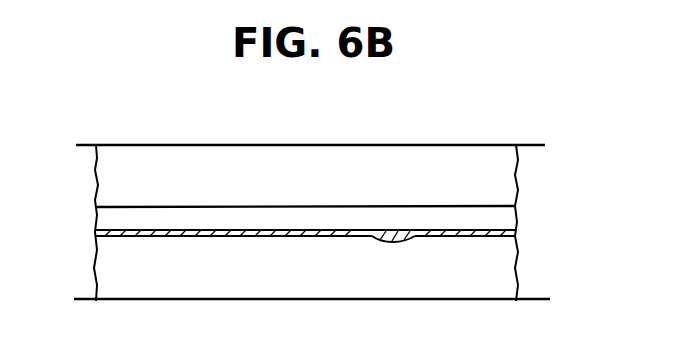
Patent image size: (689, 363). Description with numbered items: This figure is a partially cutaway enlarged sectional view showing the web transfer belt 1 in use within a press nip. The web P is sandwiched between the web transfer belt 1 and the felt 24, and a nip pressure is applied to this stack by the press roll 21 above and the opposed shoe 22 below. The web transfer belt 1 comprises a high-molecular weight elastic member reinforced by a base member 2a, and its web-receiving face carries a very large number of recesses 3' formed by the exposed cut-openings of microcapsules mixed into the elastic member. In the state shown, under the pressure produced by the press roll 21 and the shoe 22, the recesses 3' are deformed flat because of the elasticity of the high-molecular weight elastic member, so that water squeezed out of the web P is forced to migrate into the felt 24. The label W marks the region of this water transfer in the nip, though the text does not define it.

The press roll 21 is at (522, 146).
The felt 24 is at (500, 185).
The base member 2a is at (96, 236).
The recesses 3' is at (399, 287).
The web transfer belt 1 is at (492, 273).
The shoe 22 is at (540, 299).
The web P is at (103, 219).
The weld line W is at (360, 233).